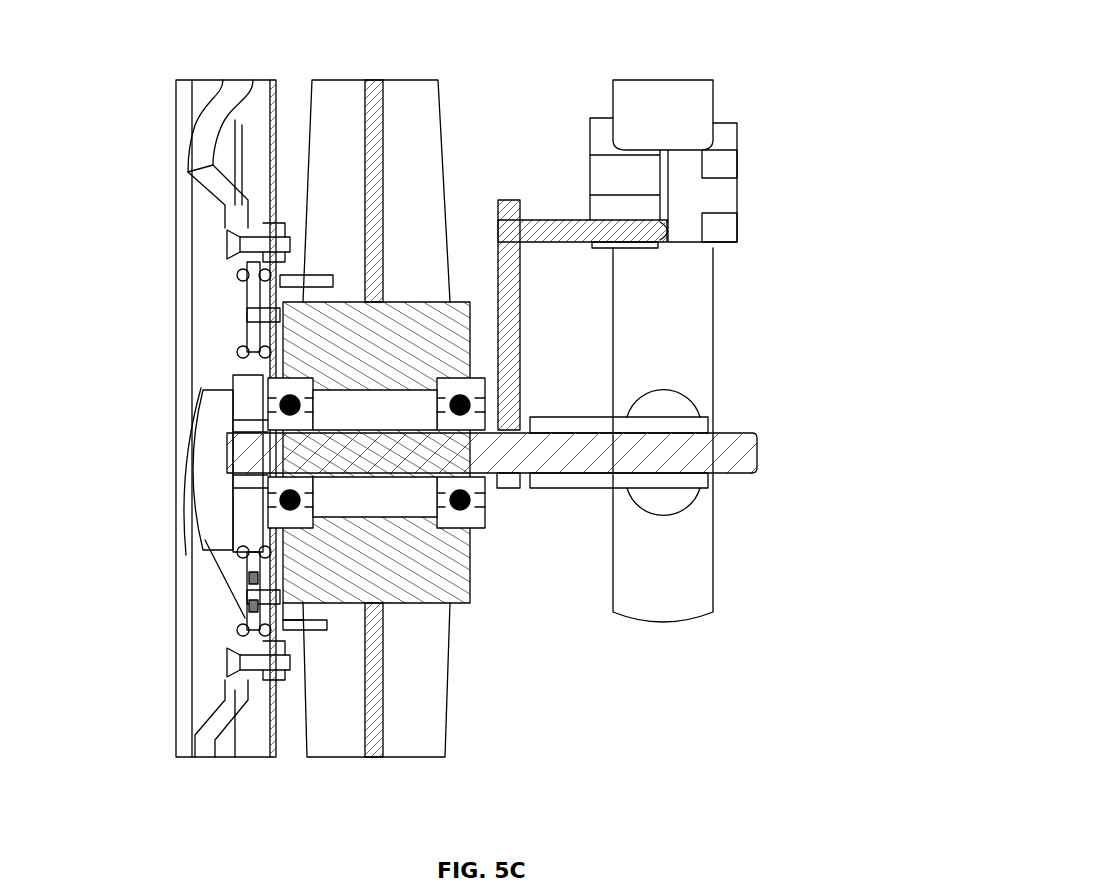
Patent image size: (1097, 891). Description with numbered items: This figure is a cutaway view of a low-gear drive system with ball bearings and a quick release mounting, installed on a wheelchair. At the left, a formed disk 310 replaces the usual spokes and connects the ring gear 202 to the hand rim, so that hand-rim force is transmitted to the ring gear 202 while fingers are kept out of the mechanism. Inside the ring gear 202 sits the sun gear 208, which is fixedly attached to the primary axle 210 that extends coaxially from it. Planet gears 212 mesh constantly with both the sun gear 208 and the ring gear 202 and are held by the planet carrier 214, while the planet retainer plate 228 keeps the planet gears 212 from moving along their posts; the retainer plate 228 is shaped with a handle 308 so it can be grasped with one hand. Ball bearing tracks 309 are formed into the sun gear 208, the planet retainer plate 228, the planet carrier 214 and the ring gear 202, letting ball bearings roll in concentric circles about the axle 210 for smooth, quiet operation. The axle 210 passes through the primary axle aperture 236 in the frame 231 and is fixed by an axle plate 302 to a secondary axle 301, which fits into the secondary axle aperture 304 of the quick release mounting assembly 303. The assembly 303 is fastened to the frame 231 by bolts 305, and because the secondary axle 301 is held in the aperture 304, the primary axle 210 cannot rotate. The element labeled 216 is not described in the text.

The ring gear 202 is at (245, 264).
The sun gear 208 is at (258, 497).
The axle 210 is at (728, 450).
The planet gear 212 is at (257, 607).
The planet carrier 214 is at (290, 627).
The tube 216 is at (405, 110).
The planet retainer plate 228 is at (227, 572).
The frame 231 is at (675, 362).
The primary axle aperture 236 is at (685, 418).
The secondary axle 301 is at (655, 232).
The axle plate 302 is at (504, 210).
The quick release mounting assembly 303 is at (745, 182).
The secondary axle aperture 304 is at (620, 212).
The bolts 305 is at (712, 228).
The handle 308 is at (185, 447).
The ball bearing tracks 309 is at (240, 283).
The formed disk 310 is at (192, 100).